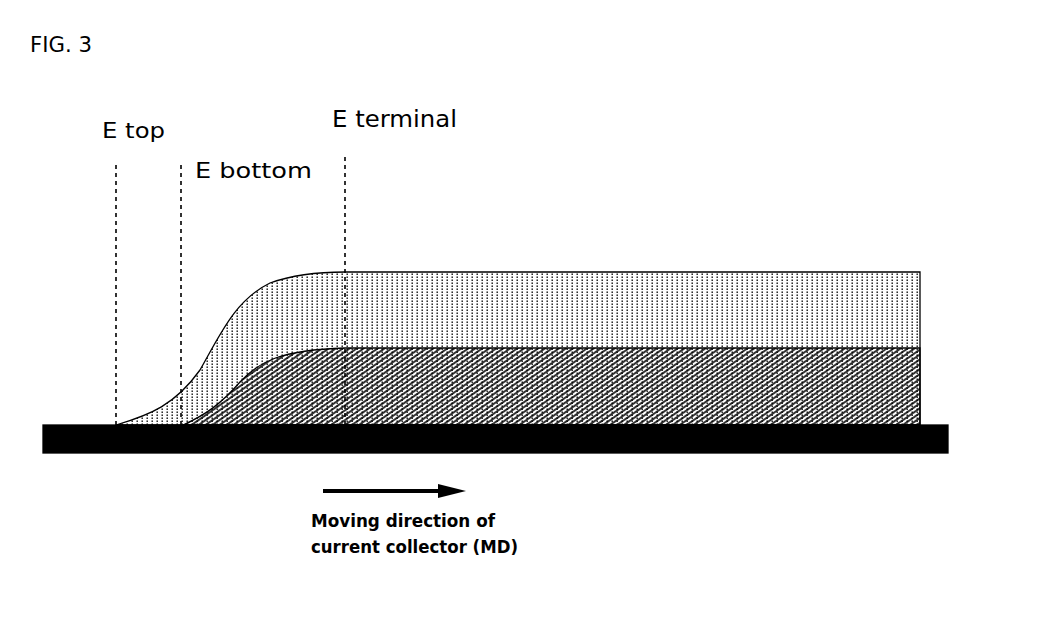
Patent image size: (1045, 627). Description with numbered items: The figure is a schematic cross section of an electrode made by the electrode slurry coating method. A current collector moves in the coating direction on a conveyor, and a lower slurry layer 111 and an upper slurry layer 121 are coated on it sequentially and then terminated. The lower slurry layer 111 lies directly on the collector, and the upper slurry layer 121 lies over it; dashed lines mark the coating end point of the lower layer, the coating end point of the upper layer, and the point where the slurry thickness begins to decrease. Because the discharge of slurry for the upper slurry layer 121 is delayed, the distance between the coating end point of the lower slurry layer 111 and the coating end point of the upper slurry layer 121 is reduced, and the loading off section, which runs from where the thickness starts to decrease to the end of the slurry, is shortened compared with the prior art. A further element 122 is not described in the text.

The lower slurry layer 111 is at (648, 453).
The upper slurry layer 121 is at (625, 316).
The lower electrode active material layer 122 is at (551, 386).